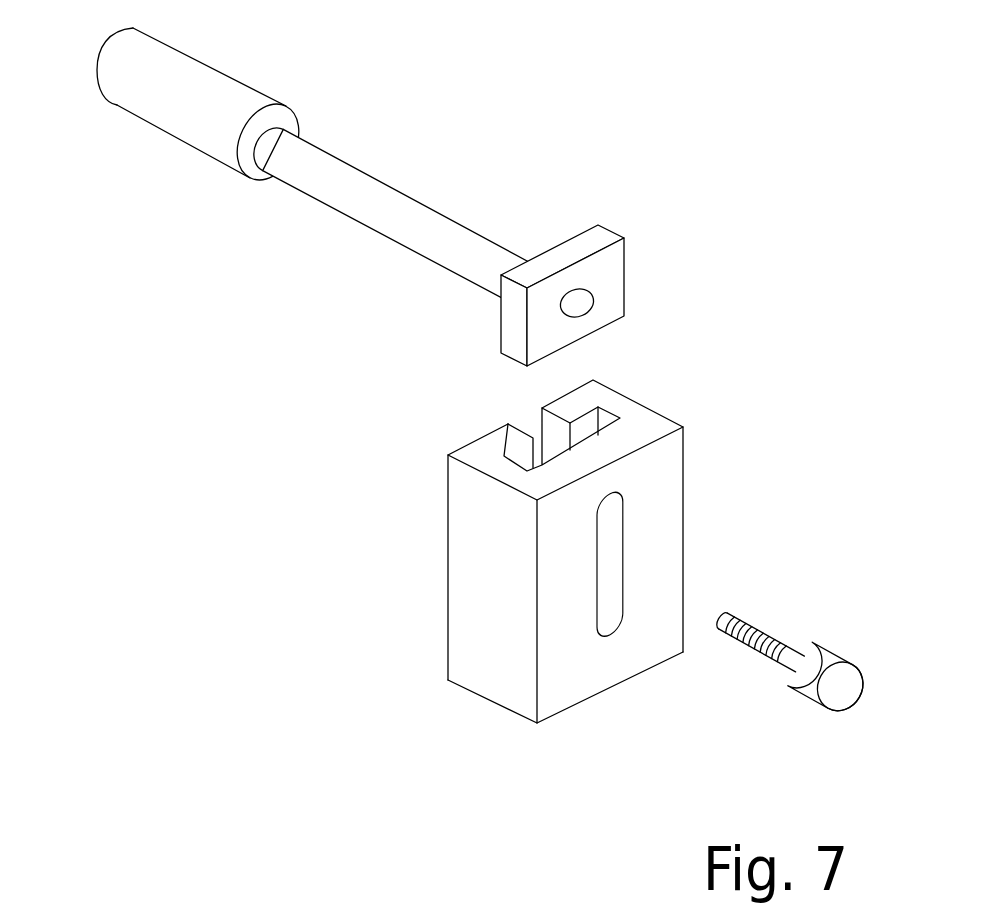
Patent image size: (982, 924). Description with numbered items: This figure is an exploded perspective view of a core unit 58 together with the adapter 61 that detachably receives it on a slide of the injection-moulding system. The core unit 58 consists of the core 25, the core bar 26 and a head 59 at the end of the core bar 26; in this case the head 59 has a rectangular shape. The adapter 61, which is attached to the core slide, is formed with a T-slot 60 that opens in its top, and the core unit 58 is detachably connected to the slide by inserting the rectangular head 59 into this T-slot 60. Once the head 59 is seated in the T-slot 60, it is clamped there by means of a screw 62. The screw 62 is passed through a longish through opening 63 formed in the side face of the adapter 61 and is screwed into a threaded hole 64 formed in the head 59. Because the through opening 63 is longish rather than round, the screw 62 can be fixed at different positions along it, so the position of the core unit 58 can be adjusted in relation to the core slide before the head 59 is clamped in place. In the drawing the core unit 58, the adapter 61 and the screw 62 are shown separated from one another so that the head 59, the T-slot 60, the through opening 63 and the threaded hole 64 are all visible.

The core 25 is at (179, 109).
The core bar 26 is at (380, 207).
The core unit 58 is at (421, 146).
The head 59 is at (595, 268).
The T-slot 60 is at (523, 458).
The adapter 61 is at (668, 482).
The screw 62 is at (755, 630).
The through opening 63 is at (608, 622).
The threaded hole 64 is at (580, 305).